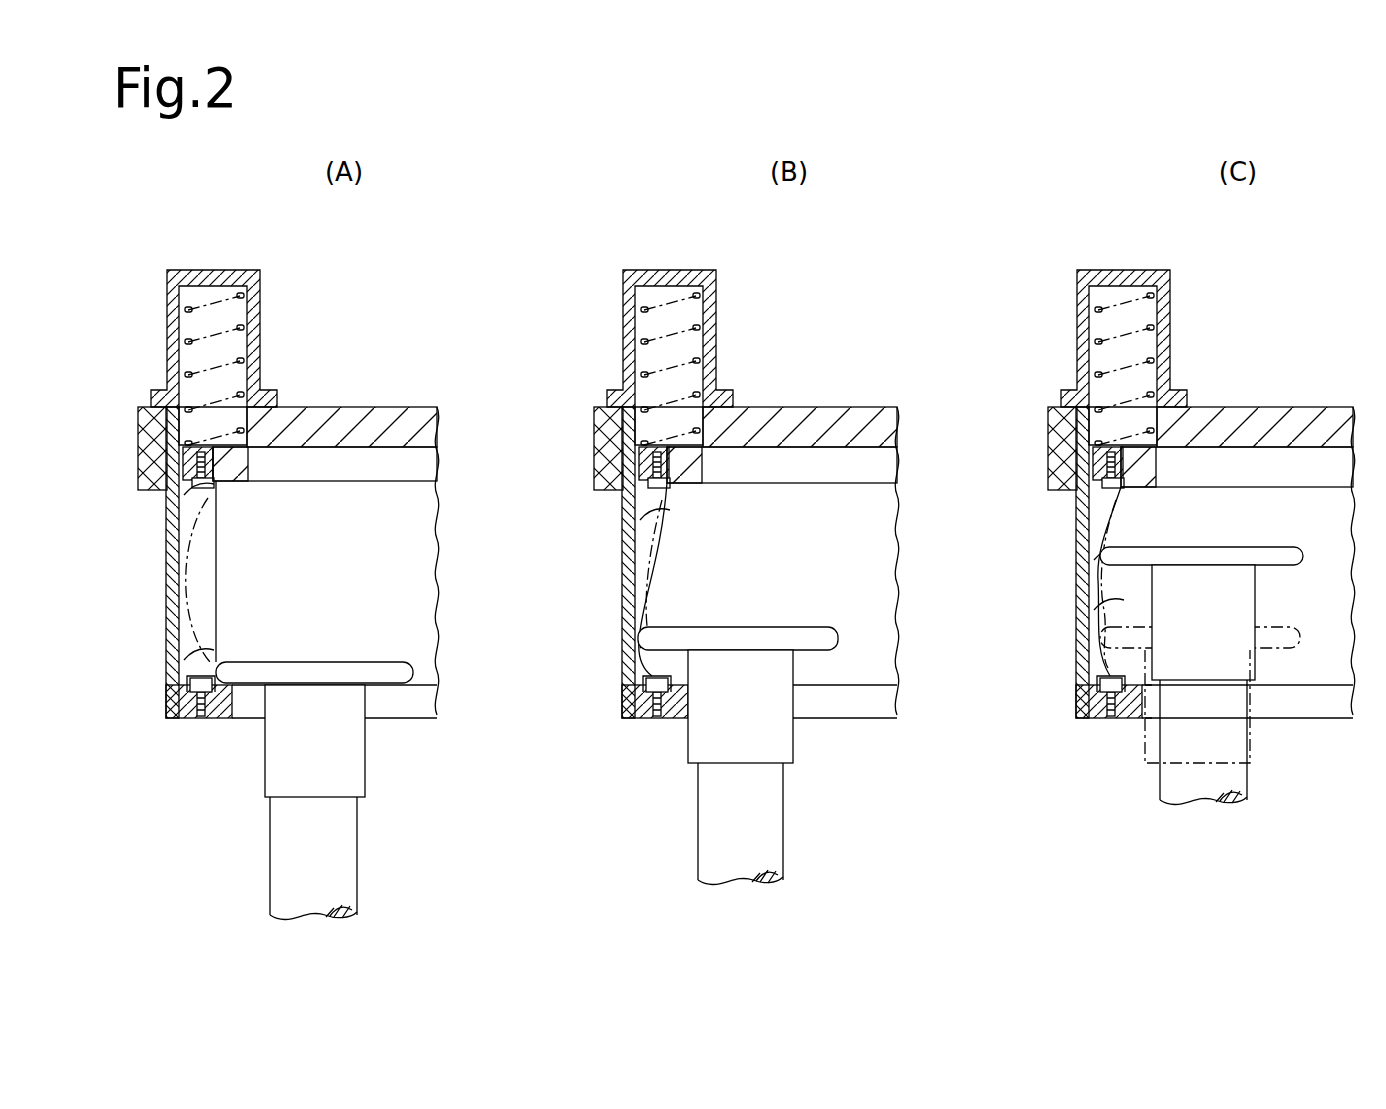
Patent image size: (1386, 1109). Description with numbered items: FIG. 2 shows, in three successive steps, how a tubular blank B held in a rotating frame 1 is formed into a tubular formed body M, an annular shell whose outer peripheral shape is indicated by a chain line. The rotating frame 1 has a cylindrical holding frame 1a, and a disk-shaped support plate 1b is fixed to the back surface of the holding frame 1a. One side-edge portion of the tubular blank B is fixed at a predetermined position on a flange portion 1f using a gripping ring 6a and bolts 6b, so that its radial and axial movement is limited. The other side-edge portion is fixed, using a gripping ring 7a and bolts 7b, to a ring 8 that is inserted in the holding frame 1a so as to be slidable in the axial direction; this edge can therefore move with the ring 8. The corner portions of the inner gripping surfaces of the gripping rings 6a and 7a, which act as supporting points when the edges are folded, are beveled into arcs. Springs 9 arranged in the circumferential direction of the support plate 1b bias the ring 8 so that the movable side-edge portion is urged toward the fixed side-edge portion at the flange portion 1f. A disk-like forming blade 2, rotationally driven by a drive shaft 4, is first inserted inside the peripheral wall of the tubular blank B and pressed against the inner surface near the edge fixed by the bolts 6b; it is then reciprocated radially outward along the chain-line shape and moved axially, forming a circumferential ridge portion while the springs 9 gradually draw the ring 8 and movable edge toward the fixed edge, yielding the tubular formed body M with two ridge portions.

The rotating frame 1 is at (158, 522).
The holding frame 1a is at (165, 563).
The support plate 1b is at (368, 412).
The flange portion 1f is at (176, 722).
The forming blade 2 is at (395, 678).
The drive shaft 4 is at (345, 843).
The gripping ring 6a is at (172, 700).
The bolts 6b is at (172, 722).
The gripping ring 7a is at (188, 486).
The bolts 7b is at (186, 465).
The ring 8 is at (232, 462).
The springs 9 is at (196, 330).
The tubular formed body M is at (163, 622).
The tubular blank B is at (167, 660).